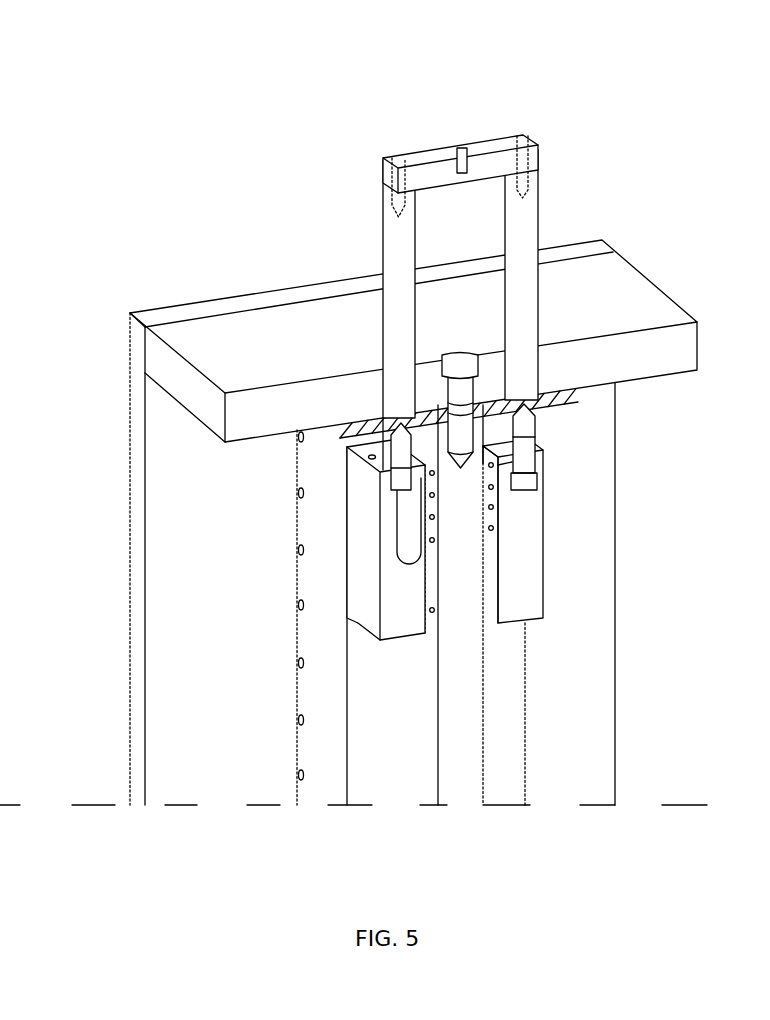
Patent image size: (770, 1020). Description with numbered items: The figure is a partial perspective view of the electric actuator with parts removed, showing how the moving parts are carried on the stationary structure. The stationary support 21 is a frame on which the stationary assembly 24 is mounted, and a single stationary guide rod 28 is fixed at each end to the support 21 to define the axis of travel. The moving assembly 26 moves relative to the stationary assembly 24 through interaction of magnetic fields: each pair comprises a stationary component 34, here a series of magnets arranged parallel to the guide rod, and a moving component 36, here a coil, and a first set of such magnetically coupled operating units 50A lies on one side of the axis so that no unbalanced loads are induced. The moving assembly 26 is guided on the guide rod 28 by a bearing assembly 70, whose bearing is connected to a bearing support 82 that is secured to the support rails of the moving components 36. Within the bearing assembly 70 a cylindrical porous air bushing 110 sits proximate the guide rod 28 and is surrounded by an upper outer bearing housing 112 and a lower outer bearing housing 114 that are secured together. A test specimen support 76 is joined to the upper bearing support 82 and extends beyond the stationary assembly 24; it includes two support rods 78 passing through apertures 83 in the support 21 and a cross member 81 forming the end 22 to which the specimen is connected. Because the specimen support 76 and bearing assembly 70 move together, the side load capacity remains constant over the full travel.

The stationary support 21 is at (344, 279).
The end 22 is at (416, 445).
The stationary assembly 24 is at (313, 525).
The moving assembly 26 is at (357, 647).
The guide rod 28 is at (484, 772).
The stationary component 34 is at (300, 742).
The moving component 36 is at (2, 400).
The first set of magnetically coupled operating units 50A is at (2, 268).
The bearing assembly 70 is at (565, 462).
The test specimen support 76 is at (416, 445).
The support rod 78 is at (540, 235).
The cross member 81 is at (467, 137).
The bearing support 82 is at (382, 367).
The aperture 83 is at (540, 345).
The air bushing 110 is at (490, 498).
The upper outer bearing housing 112 is at (502, 465).
The lower outer bearing housing 114 is at (517, 540).